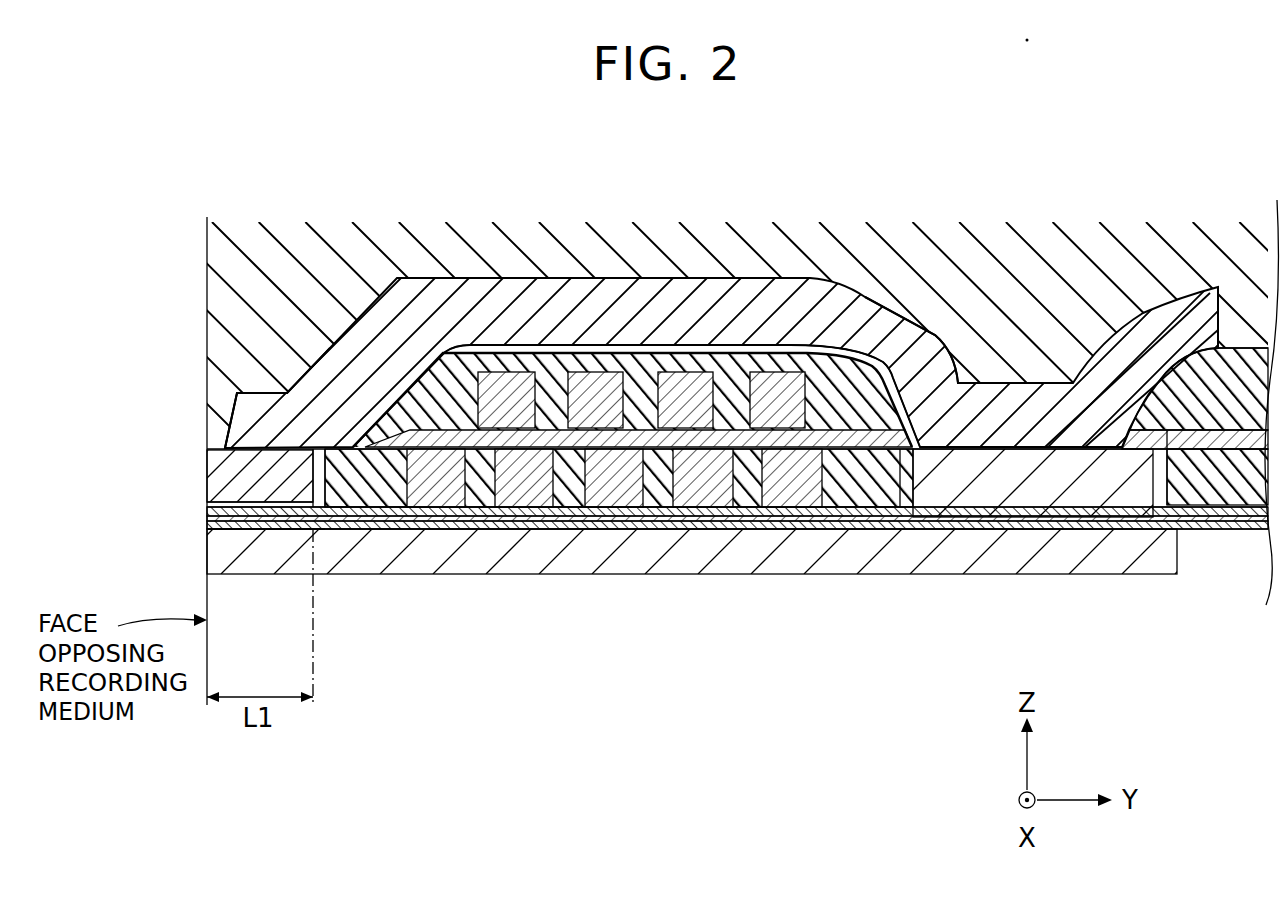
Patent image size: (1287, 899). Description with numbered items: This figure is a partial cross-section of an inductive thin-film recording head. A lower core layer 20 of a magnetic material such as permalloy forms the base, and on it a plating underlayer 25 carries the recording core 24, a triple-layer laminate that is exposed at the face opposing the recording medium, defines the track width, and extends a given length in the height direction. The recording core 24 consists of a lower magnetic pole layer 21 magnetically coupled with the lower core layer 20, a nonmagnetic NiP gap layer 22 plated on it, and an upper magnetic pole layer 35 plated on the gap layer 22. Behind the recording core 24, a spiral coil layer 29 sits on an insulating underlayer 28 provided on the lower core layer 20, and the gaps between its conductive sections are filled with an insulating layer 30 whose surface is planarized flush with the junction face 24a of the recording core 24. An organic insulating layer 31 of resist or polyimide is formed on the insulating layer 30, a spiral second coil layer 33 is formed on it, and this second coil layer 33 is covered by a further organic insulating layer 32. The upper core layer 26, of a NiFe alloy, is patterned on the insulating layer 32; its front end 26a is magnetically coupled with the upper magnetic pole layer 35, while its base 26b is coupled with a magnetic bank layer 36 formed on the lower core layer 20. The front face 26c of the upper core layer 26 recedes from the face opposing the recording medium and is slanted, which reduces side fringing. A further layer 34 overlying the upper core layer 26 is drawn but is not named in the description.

The lower core layer 20 is at (1115, 553).
The lower magnetic pole layer 21 is at (694, 535).
The gap layer 22 is at (220, 508).
The recording core 24 is at (669, 502).
The junction face 24a is at (272, 438).
The plating underlayer 25 is at (237, 537).
The upper core layer 26 is at (1137, 347).
The front end 26a is at (258, 392).
The base 26b is at (1020, 413).
The front face 26c is at (233, 402).
The insulating underlayer 28 is at (408, 512).
The coil layer 29 is at (815, 528).
The insulating layer 30 is at (337, 507).
The insulating layer 31 is at (900, 310).
The insulating layer 32 is at (838, 395).
The second coil layer 33 is at (630, 343).
The protective layer 34 is at (514, 266).
The upper magnetic pole layer 35 is at (235, 463).
The bank layer 36 is at (998, 482).